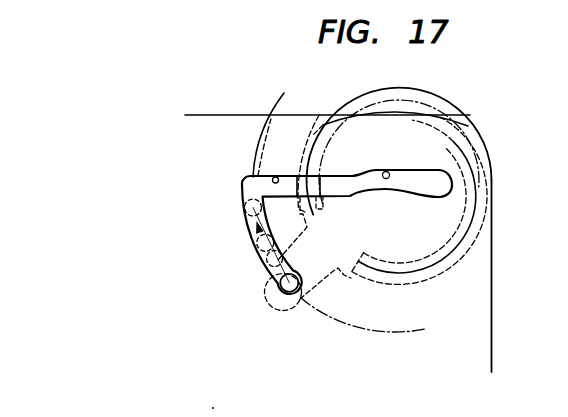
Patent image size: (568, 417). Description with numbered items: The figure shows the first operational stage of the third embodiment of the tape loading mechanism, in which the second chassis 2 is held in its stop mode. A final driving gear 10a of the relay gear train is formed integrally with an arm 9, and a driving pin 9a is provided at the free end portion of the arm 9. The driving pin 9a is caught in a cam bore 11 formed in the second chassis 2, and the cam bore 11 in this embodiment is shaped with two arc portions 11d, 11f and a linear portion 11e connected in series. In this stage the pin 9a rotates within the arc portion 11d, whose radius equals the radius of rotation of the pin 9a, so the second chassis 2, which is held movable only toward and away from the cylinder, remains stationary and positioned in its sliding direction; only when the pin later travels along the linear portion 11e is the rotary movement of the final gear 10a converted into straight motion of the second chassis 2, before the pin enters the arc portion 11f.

The second chassis 2 is at (492, 374).
The arm 9 is at (337, 276).
The driving pin 9a is at (290, 302).
The final driving gear 10a is at (484, 241).
The cam bore 11 is at (231, 192).
The arc portion 11d is at (256, 261).
The linear portion 11e is at (276, 177).
The arc portion 11f is at (387, 171).